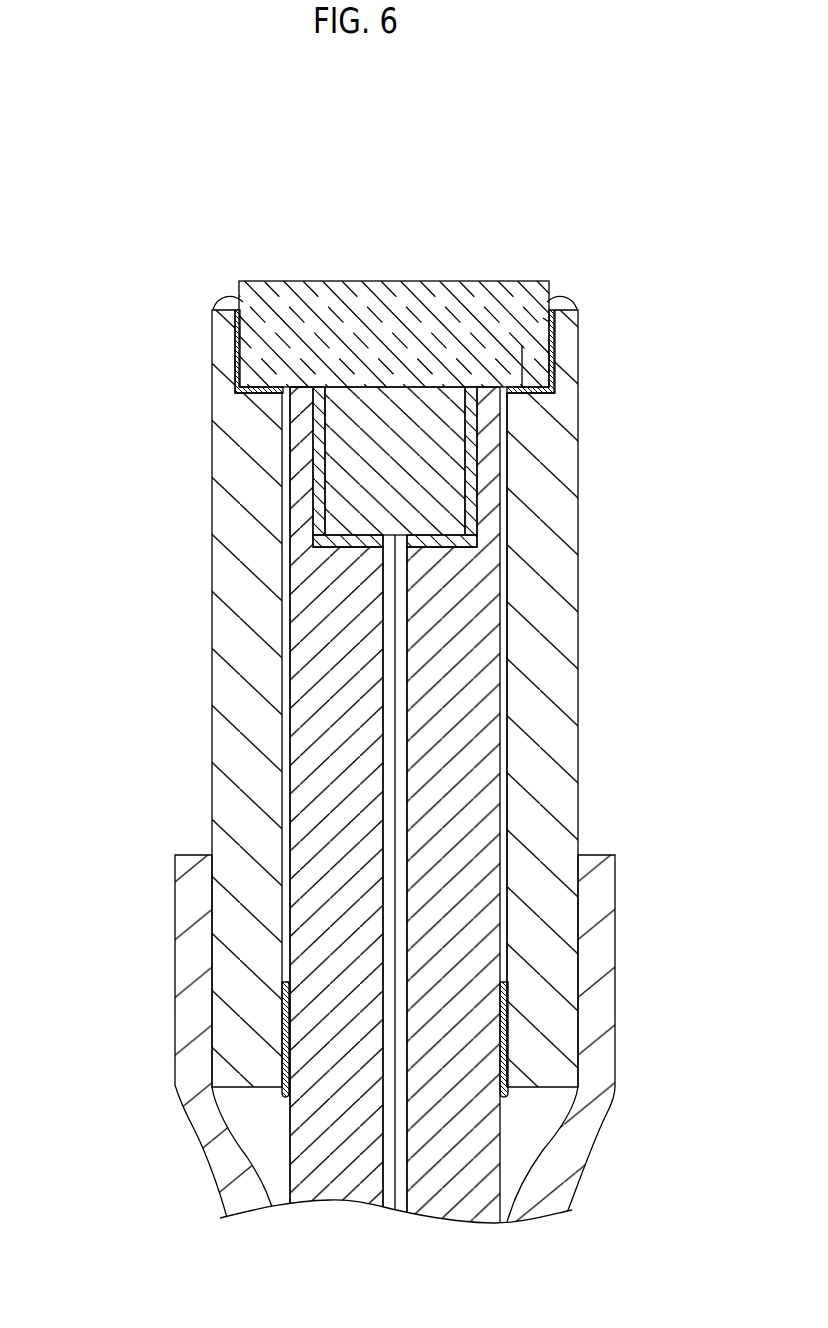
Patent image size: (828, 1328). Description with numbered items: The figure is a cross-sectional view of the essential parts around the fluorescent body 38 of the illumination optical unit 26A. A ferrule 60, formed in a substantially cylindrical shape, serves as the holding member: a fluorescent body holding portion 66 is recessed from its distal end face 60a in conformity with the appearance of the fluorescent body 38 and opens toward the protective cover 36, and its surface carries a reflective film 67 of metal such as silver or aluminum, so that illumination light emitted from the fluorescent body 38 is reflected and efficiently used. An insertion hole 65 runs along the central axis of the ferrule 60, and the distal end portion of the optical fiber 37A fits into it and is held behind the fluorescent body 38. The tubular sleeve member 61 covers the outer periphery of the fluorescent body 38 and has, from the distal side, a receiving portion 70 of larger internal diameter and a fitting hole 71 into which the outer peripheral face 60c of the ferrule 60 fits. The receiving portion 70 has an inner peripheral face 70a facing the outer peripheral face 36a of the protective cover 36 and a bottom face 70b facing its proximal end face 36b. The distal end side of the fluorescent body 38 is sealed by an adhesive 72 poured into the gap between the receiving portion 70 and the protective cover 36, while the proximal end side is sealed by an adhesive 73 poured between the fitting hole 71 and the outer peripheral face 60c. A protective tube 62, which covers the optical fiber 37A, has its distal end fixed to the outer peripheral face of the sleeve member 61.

The illumination optical unit 26A is at (141, 285).
The protective cover 36 is at (353, 302).
The outer peripheral face of the protective cover 36a is at (554, 362).
The proximal end face of the protective cover 36b is at (245, 400).
The fluorescent body 38 is at (377, 428).
The ferrule 60 is at (300, 717).
The distal end face of the ferrule 60a is at (297, 387).
The outer peripheral face of the ferrule 60c is at (290, 670).
The sleeve member 61 is at (556, 625).
The protective tube 62 is at (183, 1078).
The insertion hole 65 is at (380, 988).
The fluorescent body holding portion 66 is at (320, 462).
The reflective film 67 is at (320, 510).
The receiving portion 70 is at (535, 245).
The inner peripheral face of the receiving portion 70a is at (549, 322).
The bottom face of the receiving portion 70b is at (522, 387).
The fitting hole 71 is at (505, 693).
The adhesive 72 is at (578, 298).
The adhesive 73 is at (527, 1031).
The optical fiber 37A is at (395, 728).